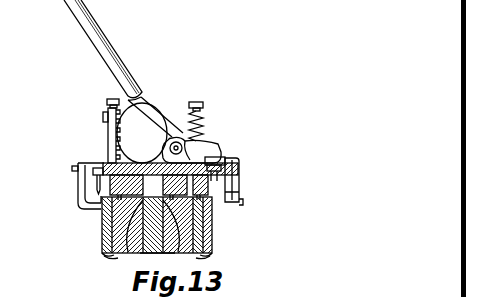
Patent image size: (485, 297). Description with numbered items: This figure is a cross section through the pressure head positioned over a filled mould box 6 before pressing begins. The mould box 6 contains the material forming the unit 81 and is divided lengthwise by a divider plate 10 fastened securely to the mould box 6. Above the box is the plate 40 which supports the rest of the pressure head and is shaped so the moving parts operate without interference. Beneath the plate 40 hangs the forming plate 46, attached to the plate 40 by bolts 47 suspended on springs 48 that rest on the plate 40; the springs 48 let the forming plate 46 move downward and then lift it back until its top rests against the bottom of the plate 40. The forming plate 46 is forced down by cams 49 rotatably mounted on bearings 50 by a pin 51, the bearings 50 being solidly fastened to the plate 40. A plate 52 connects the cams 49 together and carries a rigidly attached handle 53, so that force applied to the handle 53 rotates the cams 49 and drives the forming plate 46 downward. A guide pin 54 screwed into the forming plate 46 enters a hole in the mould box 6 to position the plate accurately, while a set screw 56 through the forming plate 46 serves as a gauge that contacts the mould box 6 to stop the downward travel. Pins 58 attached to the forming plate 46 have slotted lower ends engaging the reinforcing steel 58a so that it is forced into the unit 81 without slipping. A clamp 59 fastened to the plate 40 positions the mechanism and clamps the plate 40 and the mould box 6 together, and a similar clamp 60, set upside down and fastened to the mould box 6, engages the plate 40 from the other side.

The handle 53 is at (76, 21).
The plate connecting cams 52 is at (143, 98).
The pin 51 is at (177, 135).
The bearing 50 is at (215, 144).
The cam 49 is at (110, 133).
The spring 48 is at (106, 118).
The bolt 47 is at (107, 101).
The plate 40 is at (110, 164).
The set screw 56 is at (233, 163).
The clamp 60 is at (239, 181).
The forming plate 46 is at (232, 192).
The guide pin 54 is at (87, 186).
The clamp 59 is at (77, 199).
The pin 58 is at (100, 213).
The mould box 6 is at (102, 233).
The reinforcing steel 58a is at (107, 252).
The unit 81 is at (110, 262).
The divider plate 10 is at (147, 253).